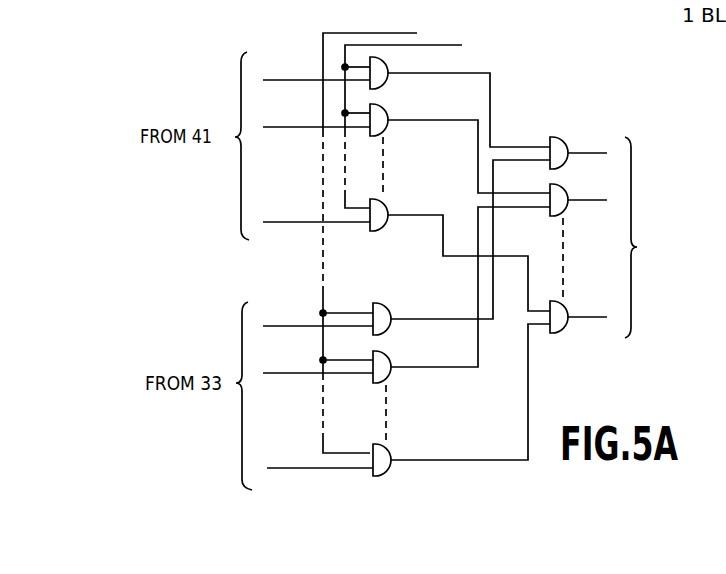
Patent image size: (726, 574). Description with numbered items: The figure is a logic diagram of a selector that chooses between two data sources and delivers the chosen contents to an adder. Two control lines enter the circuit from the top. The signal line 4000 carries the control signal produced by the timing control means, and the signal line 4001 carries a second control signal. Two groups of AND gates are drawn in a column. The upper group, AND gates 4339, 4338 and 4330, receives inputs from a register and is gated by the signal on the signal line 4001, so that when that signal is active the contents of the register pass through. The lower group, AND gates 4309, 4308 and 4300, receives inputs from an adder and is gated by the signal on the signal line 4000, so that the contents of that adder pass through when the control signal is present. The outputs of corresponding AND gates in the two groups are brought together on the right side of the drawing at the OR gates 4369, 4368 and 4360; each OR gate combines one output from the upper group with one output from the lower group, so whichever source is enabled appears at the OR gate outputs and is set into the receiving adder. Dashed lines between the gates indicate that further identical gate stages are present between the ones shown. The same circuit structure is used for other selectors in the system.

The signal line 4000 is at (409, 32).
The signal line 4001 is at (450, 33).
The AND gate 4339 is at (383, 57).
The AND gate 4338 is at (383, 105).
The AND gate 4330 is at (383, 194).
The AND gate 4309 is at (385, 301).
The AND gate 4308 is at (385, 349).
The AND gate 4300 is at (388, 442).
The OR gate 4369 is at (563, 136).
The OR gate 4368 is at (563, 184).
The OR gate 4360 is at (563, 302).